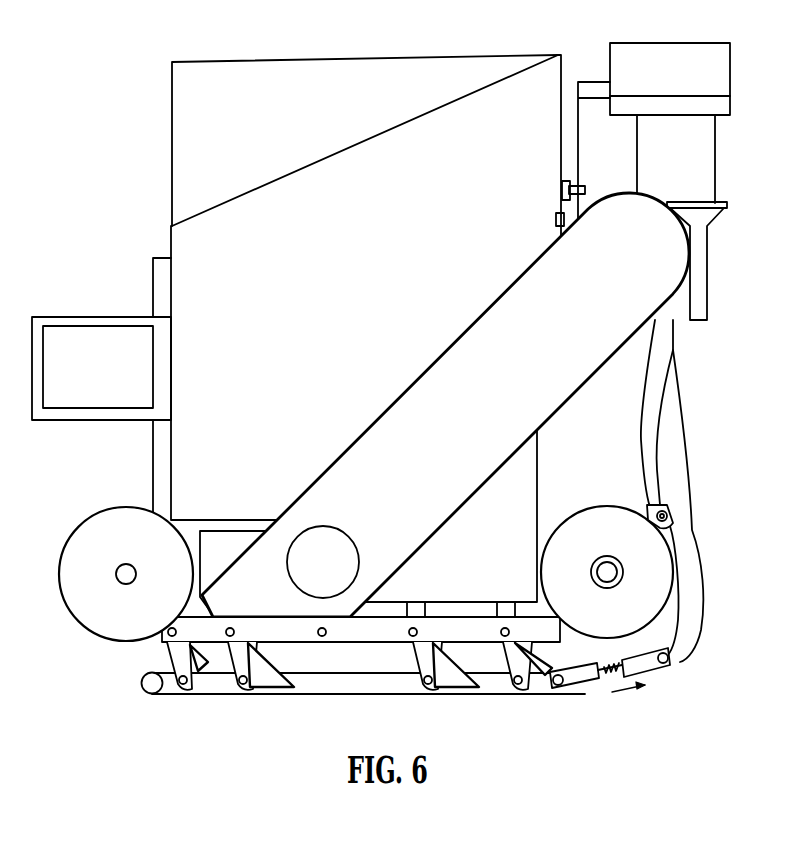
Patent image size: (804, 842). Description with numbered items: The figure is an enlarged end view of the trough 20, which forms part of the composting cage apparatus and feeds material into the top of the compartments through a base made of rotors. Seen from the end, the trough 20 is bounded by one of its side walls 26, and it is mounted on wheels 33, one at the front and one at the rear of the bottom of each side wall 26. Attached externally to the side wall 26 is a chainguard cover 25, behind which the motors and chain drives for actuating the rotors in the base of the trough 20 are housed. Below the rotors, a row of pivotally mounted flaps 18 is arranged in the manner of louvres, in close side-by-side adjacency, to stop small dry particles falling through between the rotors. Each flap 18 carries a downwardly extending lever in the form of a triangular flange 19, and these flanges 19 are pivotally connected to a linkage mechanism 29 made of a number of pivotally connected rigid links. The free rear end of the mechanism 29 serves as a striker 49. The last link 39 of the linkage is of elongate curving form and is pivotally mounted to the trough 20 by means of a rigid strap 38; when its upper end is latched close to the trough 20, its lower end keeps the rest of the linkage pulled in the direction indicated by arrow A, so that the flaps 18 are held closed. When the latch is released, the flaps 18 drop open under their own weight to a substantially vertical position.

The flaps 18 is at (292, 641).
The triangular flange 19 is at (258, 683).
The trough 20 is at (381, 393).
The chainguard covers 25 is at (487, 325).
The side walls 26 is at (304, 388).
The linkage mechanism 29 is at (500, 683).
The wheels 33 is at (118, 522).
The rigid strap 38 is at (647, 508).
The final link 39 is at (653, 473).
The striker 49 is at (146, 679).
The arrow A is at (625, 687).